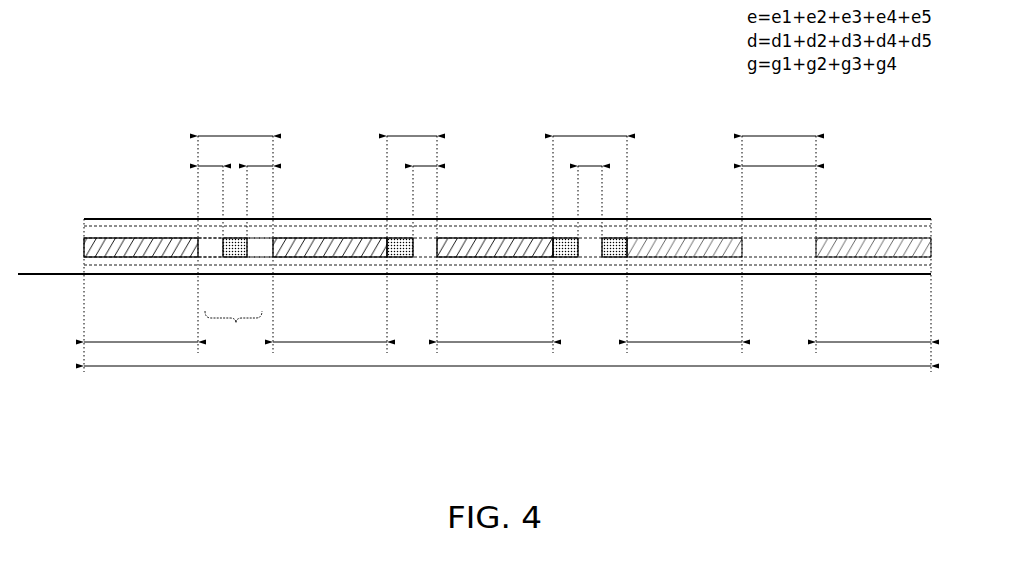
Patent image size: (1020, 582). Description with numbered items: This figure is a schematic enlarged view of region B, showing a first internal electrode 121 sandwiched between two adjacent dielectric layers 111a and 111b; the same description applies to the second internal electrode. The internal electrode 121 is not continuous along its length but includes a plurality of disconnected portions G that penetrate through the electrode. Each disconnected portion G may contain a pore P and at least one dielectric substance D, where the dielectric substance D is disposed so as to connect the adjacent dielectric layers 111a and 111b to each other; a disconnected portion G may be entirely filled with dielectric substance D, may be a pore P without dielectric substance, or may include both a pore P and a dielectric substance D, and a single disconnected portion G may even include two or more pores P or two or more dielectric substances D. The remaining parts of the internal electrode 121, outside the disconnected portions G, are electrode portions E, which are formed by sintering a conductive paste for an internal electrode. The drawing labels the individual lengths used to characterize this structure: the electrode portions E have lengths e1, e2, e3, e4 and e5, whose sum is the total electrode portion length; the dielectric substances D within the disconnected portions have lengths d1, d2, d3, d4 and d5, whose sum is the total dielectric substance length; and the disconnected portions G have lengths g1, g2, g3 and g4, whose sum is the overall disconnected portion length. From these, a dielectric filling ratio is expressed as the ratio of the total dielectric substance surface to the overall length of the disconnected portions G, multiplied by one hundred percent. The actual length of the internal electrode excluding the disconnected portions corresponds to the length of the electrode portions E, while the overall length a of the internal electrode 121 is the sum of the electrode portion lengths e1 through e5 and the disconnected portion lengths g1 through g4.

The dielectric layer 111a is at (88, 227).
The internal electrode 121 is at (474, 273).
The dielectric layer 111b is at (88, 274).
The electrode portion E is at (173, 257).
The dielectric substance D is at (216, 258).
The pore P is at (236, 258).
The disconnected portion G is at (233, 327).
The region B is at (504, 447).
The length of the internal electrode a is at (507, 377).
The electrode portion length e1 is at (141, 333).
The electrode portion length e2 is at (330, 333).
The electrode portion length e3 is at (495, 333).
The electrode portion length e4 is at (684, 333).
The electrode portion length e5 is at (873, 333).
The dielectric substance length d1 is at (210, 154).
The dielectric substance length d2 is at (260, 154).
The dielectric substance length d3 is at (425, 154).
The dielectric substance length d4 is at (590, 154).
The fifth gap width d5 is at (779, 154).
The disconnected portion length g1 is at (235, 124).
The disconnected portion length g2 is at (412, 124).
The disconnected portion length g3 is at (590, 124).
The disconnected portion length g4 is at (779, 124).